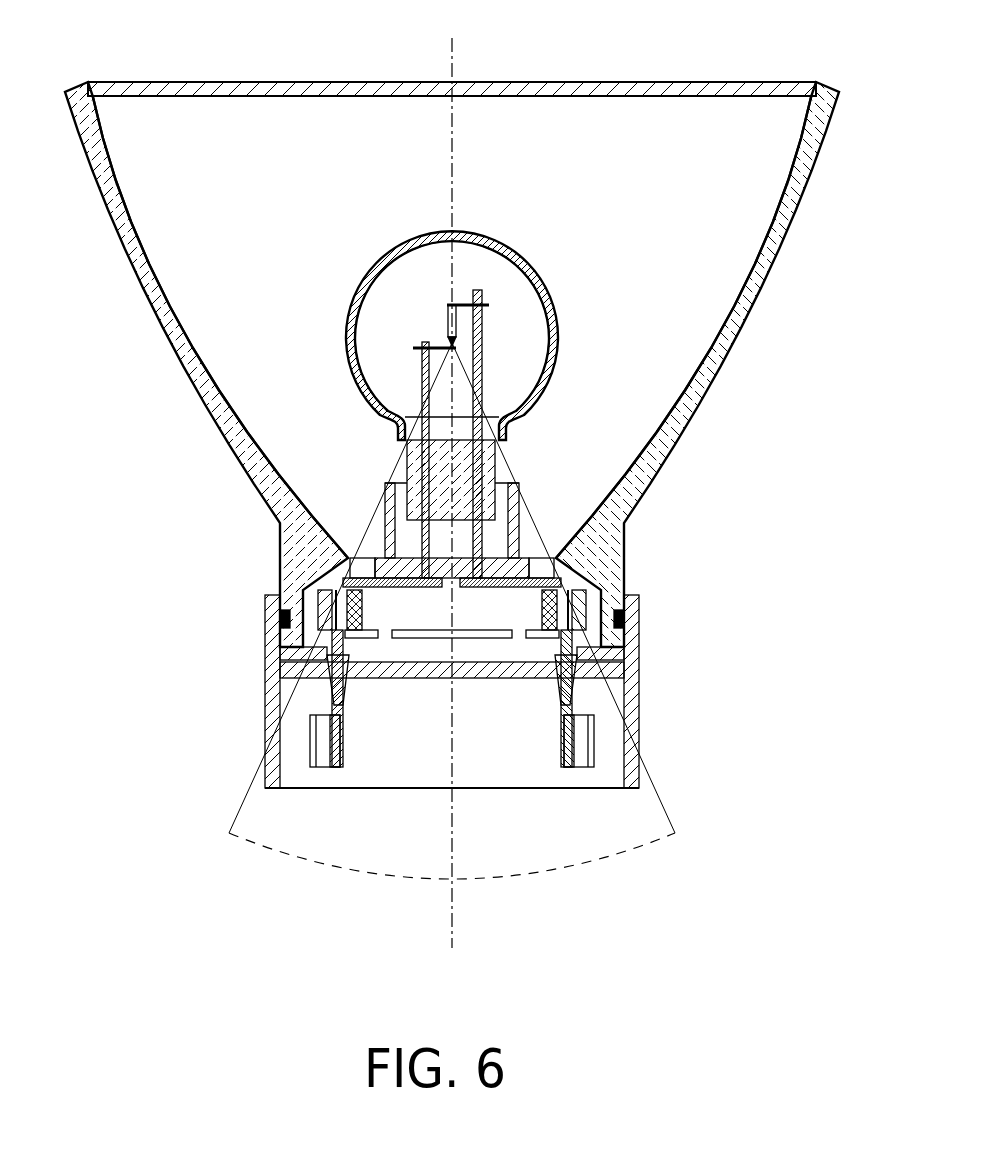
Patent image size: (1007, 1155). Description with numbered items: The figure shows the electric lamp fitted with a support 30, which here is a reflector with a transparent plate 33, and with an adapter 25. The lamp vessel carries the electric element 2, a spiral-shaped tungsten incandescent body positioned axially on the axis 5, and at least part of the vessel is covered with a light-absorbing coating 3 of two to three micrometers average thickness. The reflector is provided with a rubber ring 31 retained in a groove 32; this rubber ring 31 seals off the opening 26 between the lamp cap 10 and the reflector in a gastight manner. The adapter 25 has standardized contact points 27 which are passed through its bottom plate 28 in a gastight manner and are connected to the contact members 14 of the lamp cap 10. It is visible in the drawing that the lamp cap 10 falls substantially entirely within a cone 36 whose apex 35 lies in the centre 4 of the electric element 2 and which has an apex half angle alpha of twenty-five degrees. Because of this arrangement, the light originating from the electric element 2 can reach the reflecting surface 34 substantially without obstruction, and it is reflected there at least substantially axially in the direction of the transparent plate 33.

The electric element 2 is at (447, 313).
The light-absorbing coating 3 is at (557, 290).
The centre 4 is at (447, 322).
The axis 5 is at (452, 492).
The lamp cap 10 is at (338, 493).
The contact members 14 is at (440, 593).
The adapter 25 is at (632, 695).
The opening 26 is at (607, 640).
The contact points 27 is at (327, 762).
The bottom plate 28 is at (402, 678).
The support 30 is at (773, 240).
The rubber ring 31 is at (624, 620).
The groove 32 is at (622, 592).
The transparent plate 33 is at (694, 90).
The reflecting surface 34 is at (717, 320).
The apex 35 is at (483, 364).
The cone 36 is at (270, 852).